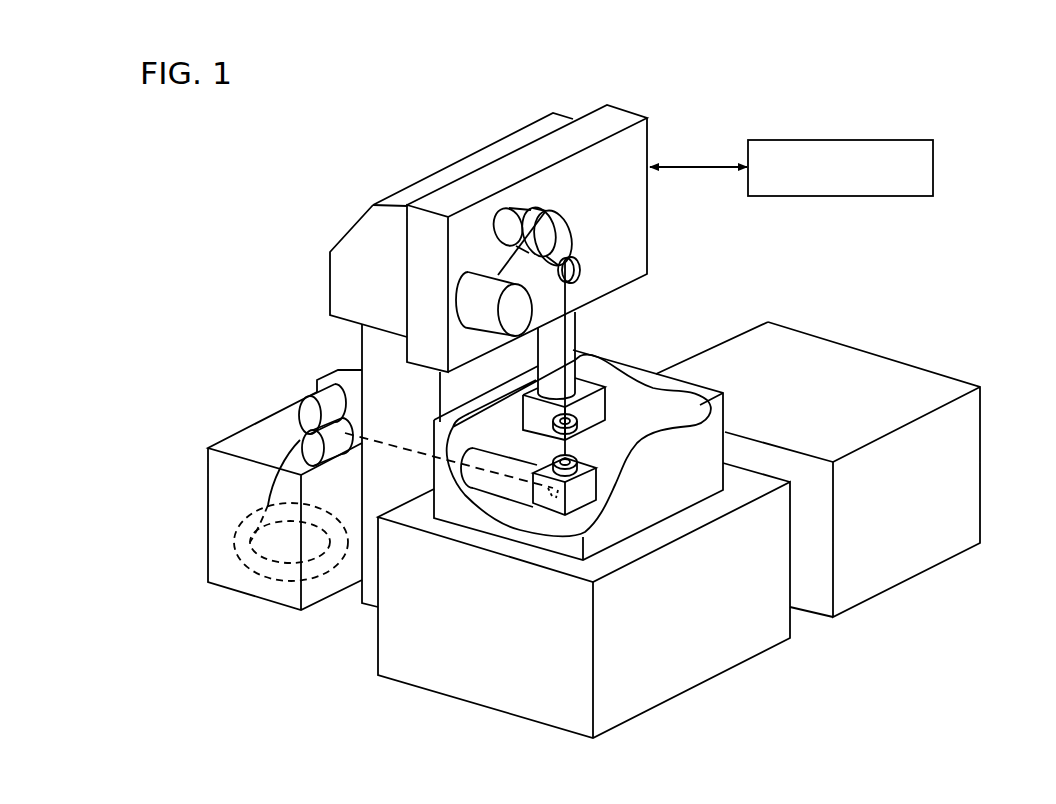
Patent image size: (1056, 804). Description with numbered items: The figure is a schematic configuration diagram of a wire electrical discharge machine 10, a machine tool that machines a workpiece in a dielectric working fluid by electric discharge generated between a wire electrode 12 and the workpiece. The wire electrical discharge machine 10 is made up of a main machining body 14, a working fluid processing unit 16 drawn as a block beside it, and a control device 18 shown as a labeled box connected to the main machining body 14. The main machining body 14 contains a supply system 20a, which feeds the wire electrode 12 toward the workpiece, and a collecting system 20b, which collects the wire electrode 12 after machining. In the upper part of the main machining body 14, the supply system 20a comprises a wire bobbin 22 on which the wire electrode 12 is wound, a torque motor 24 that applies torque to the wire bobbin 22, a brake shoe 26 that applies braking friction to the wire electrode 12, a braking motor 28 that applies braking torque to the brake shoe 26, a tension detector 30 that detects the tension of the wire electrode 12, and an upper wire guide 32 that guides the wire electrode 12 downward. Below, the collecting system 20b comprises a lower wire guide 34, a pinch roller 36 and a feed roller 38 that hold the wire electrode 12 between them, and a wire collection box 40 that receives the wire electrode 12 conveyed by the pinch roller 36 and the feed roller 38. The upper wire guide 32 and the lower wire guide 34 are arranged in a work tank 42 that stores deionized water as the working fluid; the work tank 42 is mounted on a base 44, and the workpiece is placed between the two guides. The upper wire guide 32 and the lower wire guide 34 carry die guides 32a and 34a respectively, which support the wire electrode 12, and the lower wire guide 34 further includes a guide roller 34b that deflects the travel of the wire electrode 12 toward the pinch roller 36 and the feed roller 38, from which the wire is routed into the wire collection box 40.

The wire electrical discharge machine 10 is at (179, 169).
The wire electrode 12 is at (568, 297).
The main machining body 14 is at (326, 237).
The working fluid processing unit 16 is at (968, 453).
The control device 18 is at (870, 139).
The supply system 20a is at (596, 216).
The collecting system 20b is at (252, 409).
The wire bobbin 22 is at (482, 286).
The torque motor 24 is at (453, 292).
The brake shoe 26 is at (556, 228).
The braking motor 28 is at (506, 222).
The tension detector 30 is at (580, 271).
The upper wire guide 32 is at (583, 393).
The die guide 32a is at (578, 419).
The lower wire guide 34 is at (588, 490).
The die guide 34a is at (573, 459).
The guide roller 34b is at (549, 500).
The pinch roller 36 is at (324, 398).
The feed roller 38 is at (343, 448).
The wire collection box 40 is at (220, 492).
The work tank 42 is at (698, 382).
The base 44 is at (720, 657).